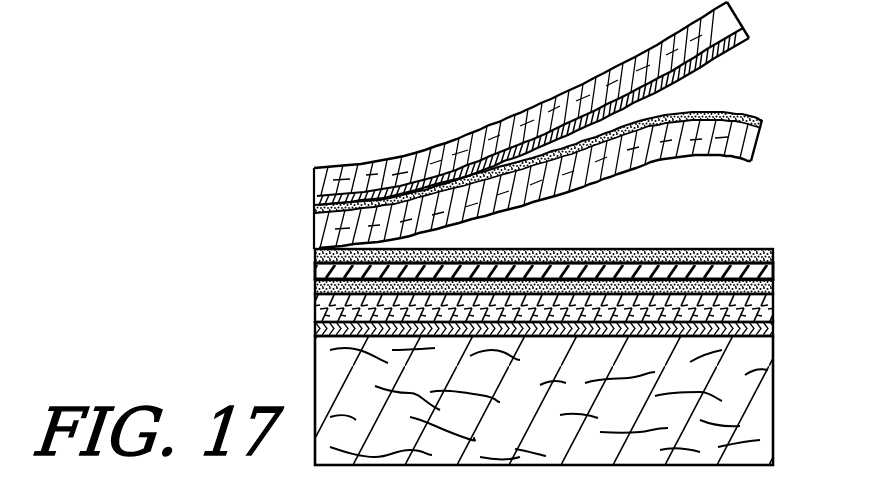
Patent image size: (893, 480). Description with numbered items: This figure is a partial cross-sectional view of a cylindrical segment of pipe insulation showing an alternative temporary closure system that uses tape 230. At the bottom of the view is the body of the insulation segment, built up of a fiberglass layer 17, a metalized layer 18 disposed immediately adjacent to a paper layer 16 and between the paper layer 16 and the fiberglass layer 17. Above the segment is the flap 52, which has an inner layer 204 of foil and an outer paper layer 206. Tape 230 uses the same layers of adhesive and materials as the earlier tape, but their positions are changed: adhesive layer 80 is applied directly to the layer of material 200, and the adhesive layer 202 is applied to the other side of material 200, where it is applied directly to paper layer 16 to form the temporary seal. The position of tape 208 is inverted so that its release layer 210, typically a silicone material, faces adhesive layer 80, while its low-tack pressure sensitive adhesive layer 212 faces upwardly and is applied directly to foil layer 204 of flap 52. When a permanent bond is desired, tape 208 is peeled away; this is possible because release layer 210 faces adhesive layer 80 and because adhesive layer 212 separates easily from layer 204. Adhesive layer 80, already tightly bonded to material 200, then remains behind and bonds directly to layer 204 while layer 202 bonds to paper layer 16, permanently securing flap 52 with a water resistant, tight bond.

The flap 52 is at (296, 192).
The outer paper layer 206 is at (750, 6).
The foil layer 204 is at (751, 38).
The pressure sensitive adhesive layer 212 is at (764, 122).
The tape 208 is at (760, 145).
The release layer 210 is at (722, 158).
The tape 230 is at (298, 326).
The adhesive layer 80 is at (775, 256).
The layer of material 200 is at (775, 268).
The adhesive layer 202 is at (775, 283).
The paper layer 16 is at (775, 305).
The metalized layer 18 is at (775, 326).
The fiberglass layer 17 is at (760, 397).